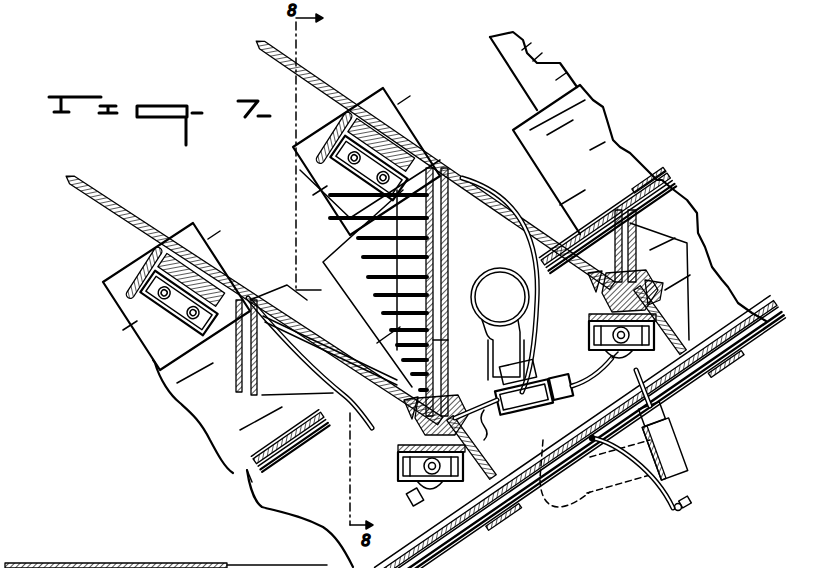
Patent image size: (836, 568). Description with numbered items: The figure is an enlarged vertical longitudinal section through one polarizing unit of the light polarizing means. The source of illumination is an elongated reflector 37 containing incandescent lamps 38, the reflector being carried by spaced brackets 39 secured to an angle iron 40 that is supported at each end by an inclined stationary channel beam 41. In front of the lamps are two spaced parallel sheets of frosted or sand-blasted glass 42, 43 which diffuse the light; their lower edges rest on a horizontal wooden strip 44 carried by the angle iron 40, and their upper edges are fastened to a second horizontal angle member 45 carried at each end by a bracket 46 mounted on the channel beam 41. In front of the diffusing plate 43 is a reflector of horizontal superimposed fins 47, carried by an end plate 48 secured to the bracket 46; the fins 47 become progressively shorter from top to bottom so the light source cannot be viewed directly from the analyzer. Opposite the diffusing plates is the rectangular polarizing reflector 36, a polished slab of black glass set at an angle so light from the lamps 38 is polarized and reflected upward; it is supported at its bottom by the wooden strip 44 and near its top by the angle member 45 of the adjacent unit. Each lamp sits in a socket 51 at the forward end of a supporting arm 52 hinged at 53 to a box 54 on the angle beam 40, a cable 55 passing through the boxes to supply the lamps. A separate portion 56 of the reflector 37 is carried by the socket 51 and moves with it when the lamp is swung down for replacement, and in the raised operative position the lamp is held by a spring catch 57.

The polarizing reflector 36 is at (323, 86).
The reflector 37 is at (487, 223).
The incandescent lamps 38 is at (508, 300).
The brackets 39 is at (490, 472).
The angle iron 40 is at (477, 470).
The channel beam 41 is at (722, 288).
The sheet of frosted glass 42 is at (449, 342).
The sheet of frosted glass 43 is at (433, 254).
The horizontal wooden strip 44 is at (407, 428).
The angle member 45 is at (360, 102).
The bracket 46 is at (402, 130).
The fins 47 is at (347, 222).
The end plate 48 is at (376, 341).
The socket 51 is at (530, 410).
The supporting arm 52 is at (593, 364).
The hinge 53 is at (629, 366).
The box 54 is at (651, 343).
The cable 55 is at (592, 338).
The separate reflector portion 56 is at (663, 502).
The spring catch 57 is at (683, 512).